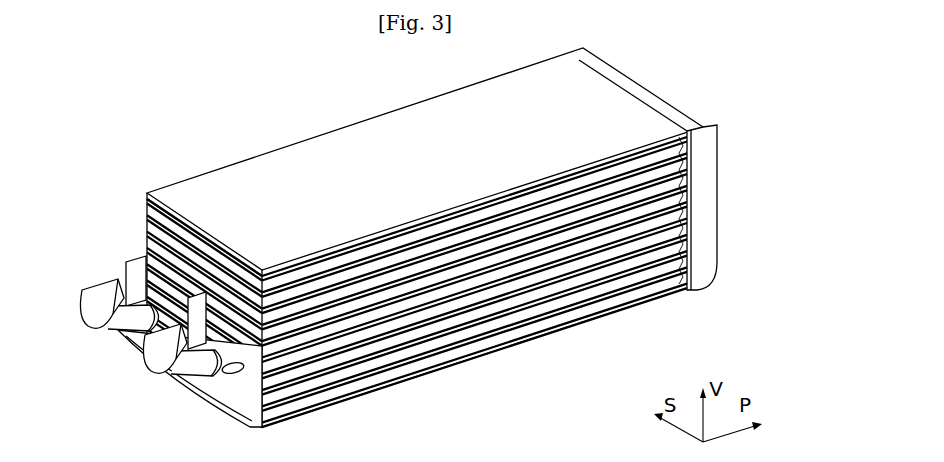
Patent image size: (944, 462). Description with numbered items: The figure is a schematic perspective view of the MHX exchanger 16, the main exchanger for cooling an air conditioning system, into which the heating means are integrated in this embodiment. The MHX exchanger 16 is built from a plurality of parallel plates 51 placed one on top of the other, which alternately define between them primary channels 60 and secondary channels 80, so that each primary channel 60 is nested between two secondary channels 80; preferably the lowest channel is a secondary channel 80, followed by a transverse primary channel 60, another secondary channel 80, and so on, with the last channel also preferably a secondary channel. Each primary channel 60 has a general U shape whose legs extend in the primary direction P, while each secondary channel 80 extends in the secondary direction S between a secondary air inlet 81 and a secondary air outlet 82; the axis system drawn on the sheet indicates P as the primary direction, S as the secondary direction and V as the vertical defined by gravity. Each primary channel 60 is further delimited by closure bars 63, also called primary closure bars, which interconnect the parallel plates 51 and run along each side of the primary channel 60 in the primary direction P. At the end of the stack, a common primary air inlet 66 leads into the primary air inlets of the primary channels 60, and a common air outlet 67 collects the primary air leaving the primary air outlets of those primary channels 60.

The MHX exchanger 16 is at (148, 126).
The secondary air outlet 82 is at (318, 130).
The secondary channel 80 is at (540, 328).
The secondary air inlet 81 is at (452, 354).
The closure bars 63 is at (620, 273).
The parallel plates 51 is at (667, 293).
The primary channel 60 is at (145, 247).
The common primary air inlet 66 is at (90, 330).
The common air outlet 67 is at (160, 367).